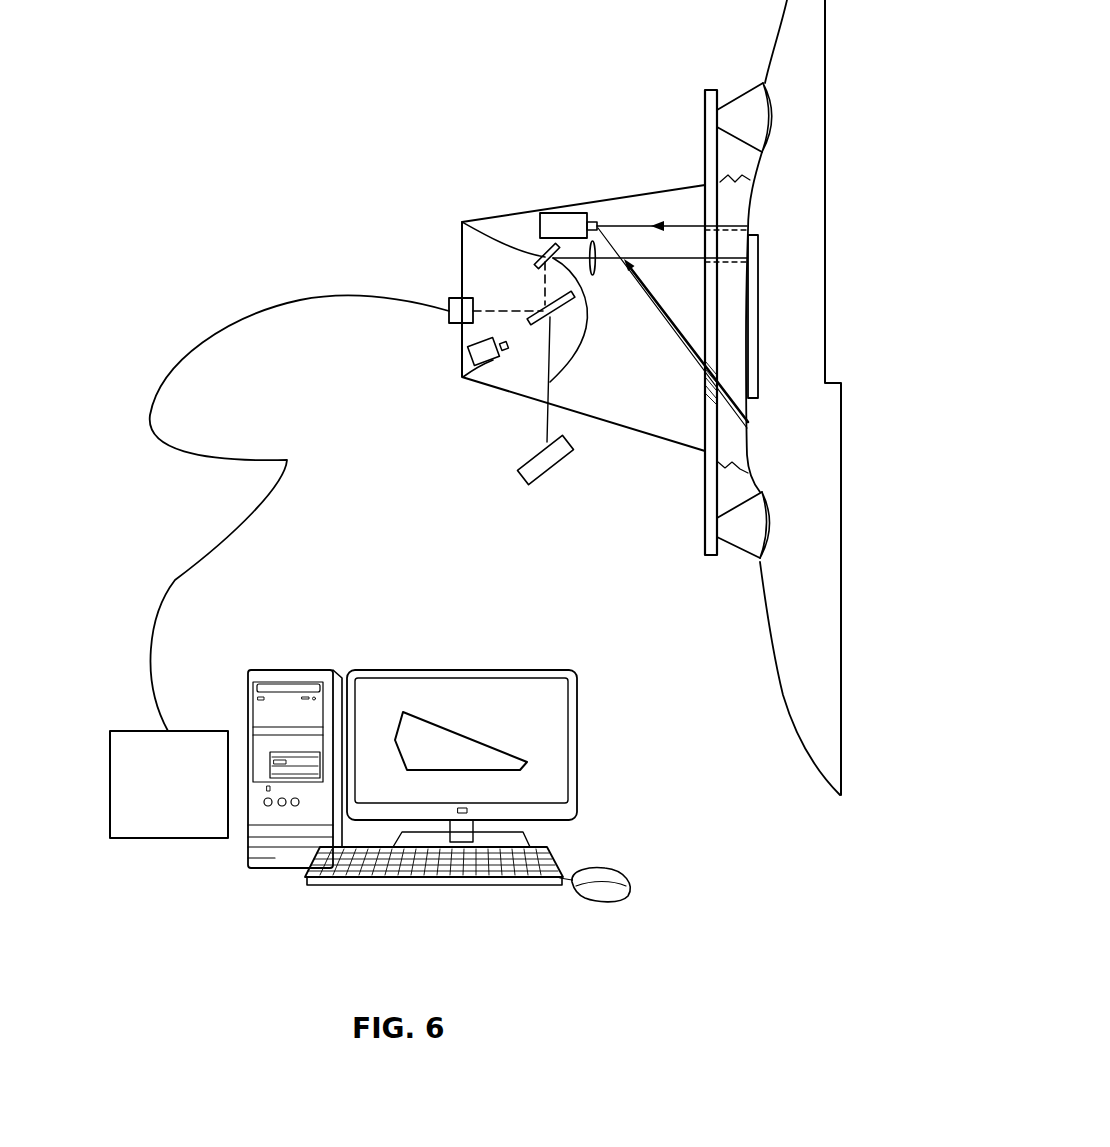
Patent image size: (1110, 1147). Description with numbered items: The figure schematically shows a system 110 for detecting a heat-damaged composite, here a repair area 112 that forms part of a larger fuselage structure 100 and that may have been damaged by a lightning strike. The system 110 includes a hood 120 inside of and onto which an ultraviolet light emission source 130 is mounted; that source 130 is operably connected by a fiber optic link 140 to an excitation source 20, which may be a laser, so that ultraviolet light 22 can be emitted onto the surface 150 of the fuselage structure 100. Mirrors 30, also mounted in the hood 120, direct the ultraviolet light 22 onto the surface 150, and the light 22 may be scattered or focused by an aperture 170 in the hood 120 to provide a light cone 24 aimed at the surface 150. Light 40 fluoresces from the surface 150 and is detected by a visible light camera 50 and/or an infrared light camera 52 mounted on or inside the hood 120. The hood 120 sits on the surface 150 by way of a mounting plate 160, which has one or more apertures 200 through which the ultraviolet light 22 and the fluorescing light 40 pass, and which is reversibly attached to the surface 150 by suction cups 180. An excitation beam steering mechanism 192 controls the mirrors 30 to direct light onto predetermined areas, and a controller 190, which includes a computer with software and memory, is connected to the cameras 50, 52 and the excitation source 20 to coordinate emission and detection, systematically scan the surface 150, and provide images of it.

The excitation source 20 is at (110, 787).
The ultraviolet light 22 is at (520, 310).
The light cone 24 is at (679, 342).
The mirrors 30 is at (461, 221).
The fluorescing light 40 is at (636, 223).
The visible light camera 50 is at (461, 377).
The infrared light camera 52 is at (565, 213).
The fuselage structure 100 is at (775, 683).
The system 110 is at (334, 92).
The repair area 112 is at (760, 385).
The hood 120 is at (535, 401).
The ultraviolet light emission source 130 is at (456, 298).
The fiber optic link 140 is at (150, 428).
The surface 150 is at (718, 466).
The mounting plate 160 is at (705, 548).
The aperture 170 is at (593, 277).
The suction cups 180 is at (724, 108).
The controller 190 is at (555, 790).
The excitation beam steering mechanism 192 is at (518, 475).
The apertures 200 is at (712, 217).